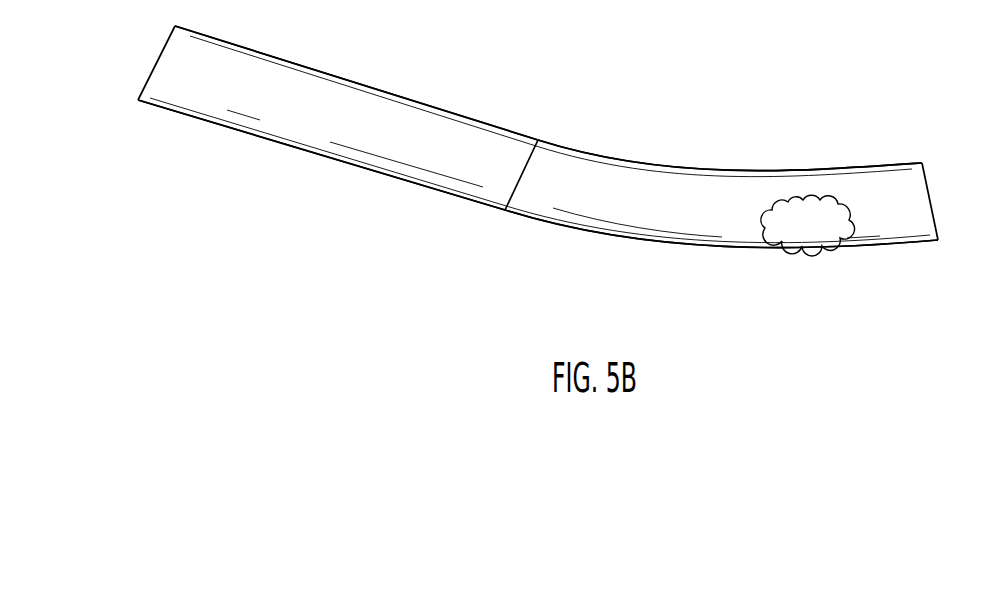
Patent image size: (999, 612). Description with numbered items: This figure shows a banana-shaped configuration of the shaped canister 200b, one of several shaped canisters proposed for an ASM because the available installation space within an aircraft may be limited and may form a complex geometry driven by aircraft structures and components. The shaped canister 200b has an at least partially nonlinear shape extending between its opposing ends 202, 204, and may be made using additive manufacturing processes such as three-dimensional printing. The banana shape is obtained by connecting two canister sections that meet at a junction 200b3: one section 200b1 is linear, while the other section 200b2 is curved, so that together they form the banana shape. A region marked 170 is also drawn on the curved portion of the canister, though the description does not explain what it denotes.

The shaped canister 200b is at (443, 137).
The section 200b1 is at (308, 135).
The section 200b2 is at (617, 220).
The junction 200b3 is at (512, 212).
The end 204 is at (160, 87).
The end 202 is at (920, 213).
The indicia / logo region 170 is at (840, 248).